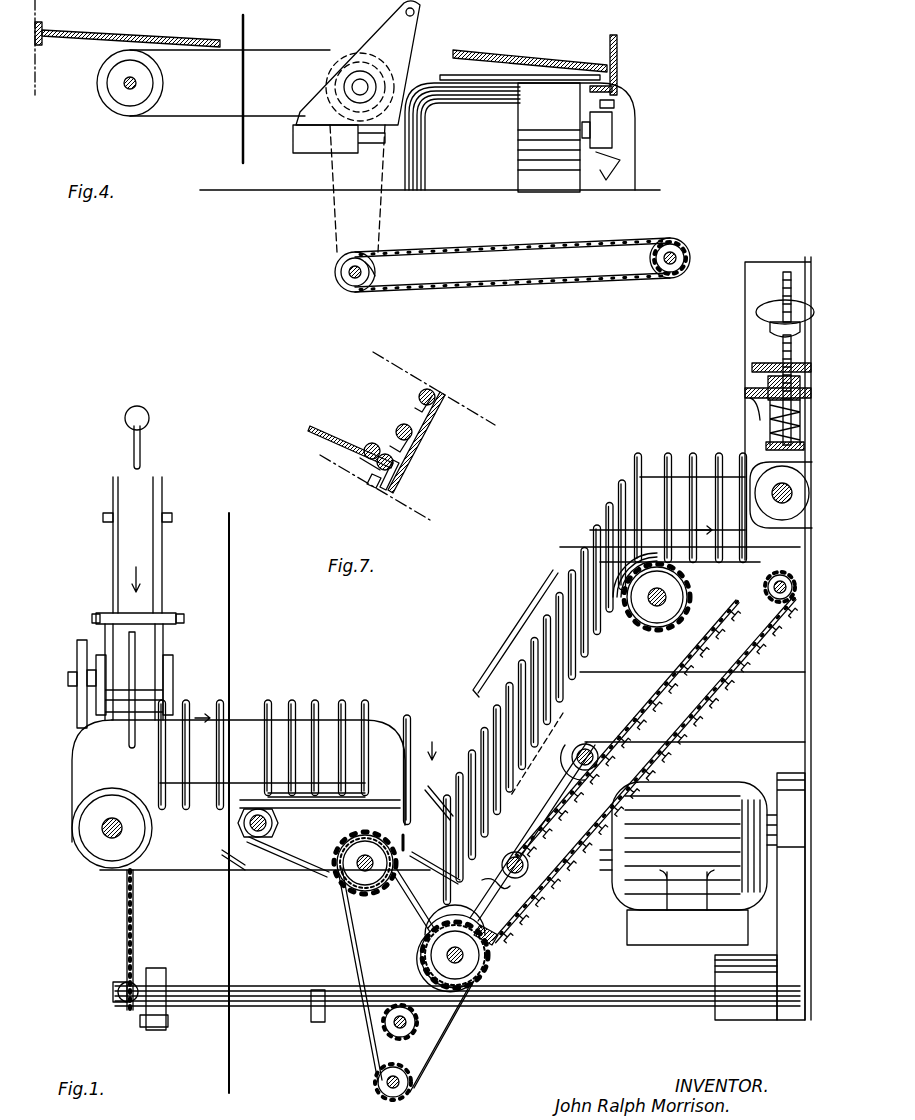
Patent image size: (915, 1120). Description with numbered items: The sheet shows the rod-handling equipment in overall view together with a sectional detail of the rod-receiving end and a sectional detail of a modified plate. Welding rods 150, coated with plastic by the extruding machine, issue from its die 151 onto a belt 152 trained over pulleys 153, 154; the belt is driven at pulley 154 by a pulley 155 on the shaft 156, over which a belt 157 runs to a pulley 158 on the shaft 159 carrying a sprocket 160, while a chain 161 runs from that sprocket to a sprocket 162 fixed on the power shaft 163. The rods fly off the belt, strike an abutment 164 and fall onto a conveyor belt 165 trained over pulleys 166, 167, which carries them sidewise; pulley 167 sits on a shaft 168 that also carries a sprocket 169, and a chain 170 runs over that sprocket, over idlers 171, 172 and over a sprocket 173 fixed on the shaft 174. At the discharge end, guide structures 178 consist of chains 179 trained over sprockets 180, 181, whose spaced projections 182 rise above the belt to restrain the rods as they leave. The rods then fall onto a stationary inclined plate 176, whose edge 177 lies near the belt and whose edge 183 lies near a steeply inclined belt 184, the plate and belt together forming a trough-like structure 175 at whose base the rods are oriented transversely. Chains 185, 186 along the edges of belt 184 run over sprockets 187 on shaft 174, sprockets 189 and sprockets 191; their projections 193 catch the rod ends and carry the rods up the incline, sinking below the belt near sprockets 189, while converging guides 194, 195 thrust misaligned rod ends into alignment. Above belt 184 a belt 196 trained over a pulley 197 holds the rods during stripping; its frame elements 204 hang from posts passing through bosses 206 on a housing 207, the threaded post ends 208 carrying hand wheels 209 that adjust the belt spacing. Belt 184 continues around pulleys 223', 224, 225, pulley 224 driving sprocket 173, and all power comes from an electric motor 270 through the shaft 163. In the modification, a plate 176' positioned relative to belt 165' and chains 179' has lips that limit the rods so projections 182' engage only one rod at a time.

In FIG. 4, the welding rods 150 is at (76, 33).
In FIG. 7, the welding rods 150 is at (418, 392).
In FIG. 1, the welding rods 150 is at (142, 456).
In FIG. 4, the die 151 is at (40, 22).
In FIG. 1, the die 151 is at (150, 420).
In FIG. 4, the belt 152 is at (314, 51).
In FIG. 1, the belt 152 is at (158, 508).
In FIG. 4, the pulley 153 is at (153, 84).
In FIG. 4, the pulley 154 is at (340, 79).
In FIG. 4, the pulley 155 is at (326, 96).
In FIG. 1, the pulley 155 is at (77, 652).
In FIG. 4, the shaft 156 is at (363, 86).
In FIG. 1, the shaft 156 is at (68, 678).
In FIG. 4, the belt 157 is at (334, 222).
In FIG. 1, the belt 157 is at (72, 730).
In FIG. 4, the pulley 158 is at (337, 272).
In FIG. 4, the shaft 159 is at (351, 278).
In FIG. 4, the sprocket 160 is at (380, 273).
In FIG. 4, the chain 161 is at (450, 247).
In FIG. 1, the chain 161 is at (125, 901).
In FIG. 4, the sprocket 162 is at (652, 260).
In FIG. 1, the sprocket 162 is at (122, 1008).
In FIG. 4, the shaft 163 is at (673, 256).
In FIG. 1, the shaft 163 is at (192, 1006).
In FIG. 4, the abutment 164 is at (617, 66).
In FIG. 4, the conveyor belt 165 is at (520, 133).
In FIG. 1, the conveyor belt 165 is at (265, 789).
In FIG. 4, the pulley 166 is at (586, 165).
In FIG. 1, the pulley 166 is at (145, 850).
In FIG. 1, the pulley 167 is at (335, 820).
In FIG. 1, the shaft 168 is at (365, 863).
In FIG. 1, the sprocket 169 is at (365, 900).
In FIG. 1, the chain 170 is at (348, 926).
In FIG. 1, the idler 171 is at (402, 1038).
In FIG. 1, the idler 172 is at (382, 1068).
In FIG. 1, the sprocket 173 is at (488, 968).
In FIG. 1, the shaft 174 is at (455, 946).
In FIG. 1, the trough-like structure 175 is at (439, 742).
In FIG. 1, the plate 176 is at (427, 871).
In FIG. 1, the edge 177 is at (422, 838).
In FIG. 1, the guide structures 178 is at (300, 706).
In FIG. 1, the chains 179 is at (314, 780).
In FIG. 1, the sprockets 180 is at (346, 826).
In FIG. 1, the sprockets 181 is at (272, 824).
In FIG. 1, the projections 182 is at (326, 785).
In FIG. 1, the edge 183 is at (450, 808).
In FIG. 1, the belt 184 is at (645, 476).
In FIG. 1, the chain 185 is at (632, 618).
In FIG. 1, the chain 186 is at (690, 590).
In FIG. 1, the sprockets 187 is at (498, 898).
In FIG. 1, the sprockets 189 is at (658, 628).
In FIG. 1, the sprockets 191 is at (770, 598).
In FIG. 1, the projections 193 is at (592, 520).
In FIG. 1, the guide 194 is at (570, 712).
In FIG. 1, the guide 195 is at (510, 650).
In FIG. 1, the belt 196 is at (755, 420).
In FIG. 1, the pulley 197 is at (774, 482).
In FIG. 1, the frame elements 204 is at (766, 446).
In FIG. 1, the bosses 206 is at (768, 380).
In FIG. 1, the housing 207 is at (745, 346).
In FIG. 1, the threaded upper ends 208 is at (782, 290).
In FIG. 1, the hand wheels 209 is at (752, 362).
In FIG. 1, the idler roller 223' is at (568, 811).
In FIG. 1, the pulley 224 is at (504, 936).
In FIG. 1, the pulley 225 is at (748, 614).
In FIG. 1, the electric motor 270 is at (707, 786).
In FIG. 7, the belt 165' is at (434, 442).
In FIG. 7, the plate 176' is at (350, 432).
In FIG. 7, the chains 179' is at (414, 475).
In FIG. 7, the projections 182' is at (368, 495).